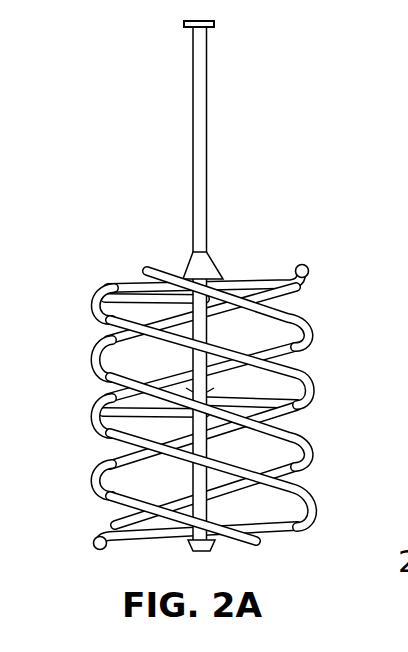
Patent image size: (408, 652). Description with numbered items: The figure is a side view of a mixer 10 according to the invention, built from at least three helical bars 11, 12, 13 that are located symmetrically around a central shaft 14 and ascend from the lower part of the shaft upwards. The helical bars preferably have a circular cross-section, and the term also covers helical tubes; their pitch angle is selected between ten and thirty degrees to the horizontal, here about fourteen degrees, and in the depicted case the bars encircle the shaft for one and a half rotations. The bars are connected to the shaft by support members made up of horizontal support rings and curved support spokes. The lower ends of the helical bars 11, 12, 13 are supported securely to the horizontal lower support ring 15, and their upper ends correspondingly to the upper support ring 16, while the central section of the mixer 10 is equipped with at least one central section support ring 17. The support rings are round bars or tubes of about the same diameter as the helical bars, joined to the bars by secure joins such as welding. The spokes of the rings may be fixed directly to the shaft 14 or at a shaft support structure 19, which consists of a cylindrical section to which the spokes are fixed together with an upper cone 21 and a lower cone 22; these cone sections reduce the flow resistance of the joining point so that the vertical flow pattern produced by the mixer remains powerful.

The mixer 10 is at (199, 300).
The helical bar 11 is at (128, 517).
The helical bar 12 is at (302, 501).
The helical bar 13 is at (115, 462).
The shaft 14 is at (204, 187).
The lower support ring 15 is at (280, 531).
The upper support ring 16 is at (285, 281).
The central section support ring 17 is at (301, 408).
The shaft support structure 19 is at (240, 388).
The upper cone 21 is at (190, 263).
The lower cone 22 is at (126, 300).